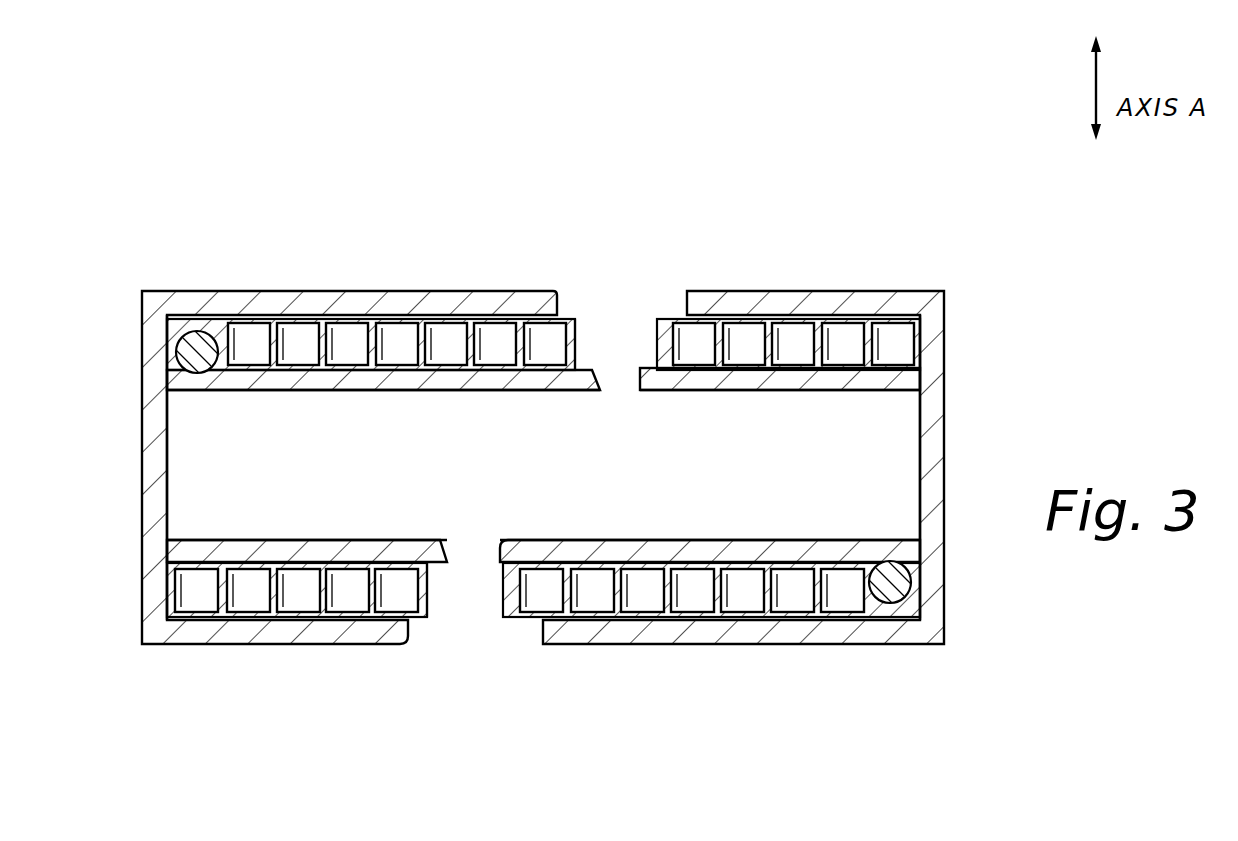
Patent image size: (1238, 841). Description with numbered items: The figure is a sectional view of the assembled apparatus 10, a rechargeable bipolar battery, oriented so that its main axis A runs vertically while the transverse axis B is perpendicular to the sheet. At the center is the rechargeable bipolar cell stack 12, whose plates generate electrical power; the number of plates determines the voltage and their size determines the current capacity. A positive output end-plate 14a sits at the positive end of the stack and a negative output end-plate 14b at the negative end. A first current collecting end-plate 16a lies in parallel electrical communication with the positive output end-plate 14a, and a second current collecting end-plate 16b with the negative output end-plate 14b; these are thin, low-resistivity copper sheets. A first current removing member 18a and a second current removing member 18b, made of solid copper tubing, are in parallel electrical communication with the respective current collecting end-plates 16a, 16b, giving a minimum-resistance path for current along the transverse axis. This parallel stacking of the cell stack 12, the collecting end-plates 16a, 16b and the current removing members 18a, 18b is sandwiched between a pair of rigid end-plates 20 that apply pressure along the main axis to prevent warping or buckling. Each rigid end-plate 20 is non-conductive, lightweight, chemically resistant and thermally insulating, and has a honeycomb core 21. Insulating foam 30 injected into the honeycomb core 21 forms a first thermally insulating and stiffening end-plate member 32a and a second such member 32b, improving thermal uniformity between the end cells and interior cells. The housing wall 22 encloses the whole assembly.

The assembled apparatus 10 is at (158, 158).
The rechargeable bipolar cell stack 12 is at (897, 447).
The positive output end-plate 14a is at (626, 388).
The negative output end-plate 14b is at (497, 547).
The first current collecting end-plate 16a is at (888, 378).
The second current collecting end-plate 16b is at (857, 555).
The first current removing member 18a is at (192, 374).
The second current removing member 18b is at (905, 577).
The rigid end-plate 20 is at (183, 328).
The honeycomb core 21 is at (348, 345).
The housing 22 is at (242, 300).
The insulating foam 30 is at (499, 340).
The first thermally insulating and stiffening end-plate member 32a is at (584, 305).
The second thermally insulating and stiffening end-plate member 32b is at (440, 625).